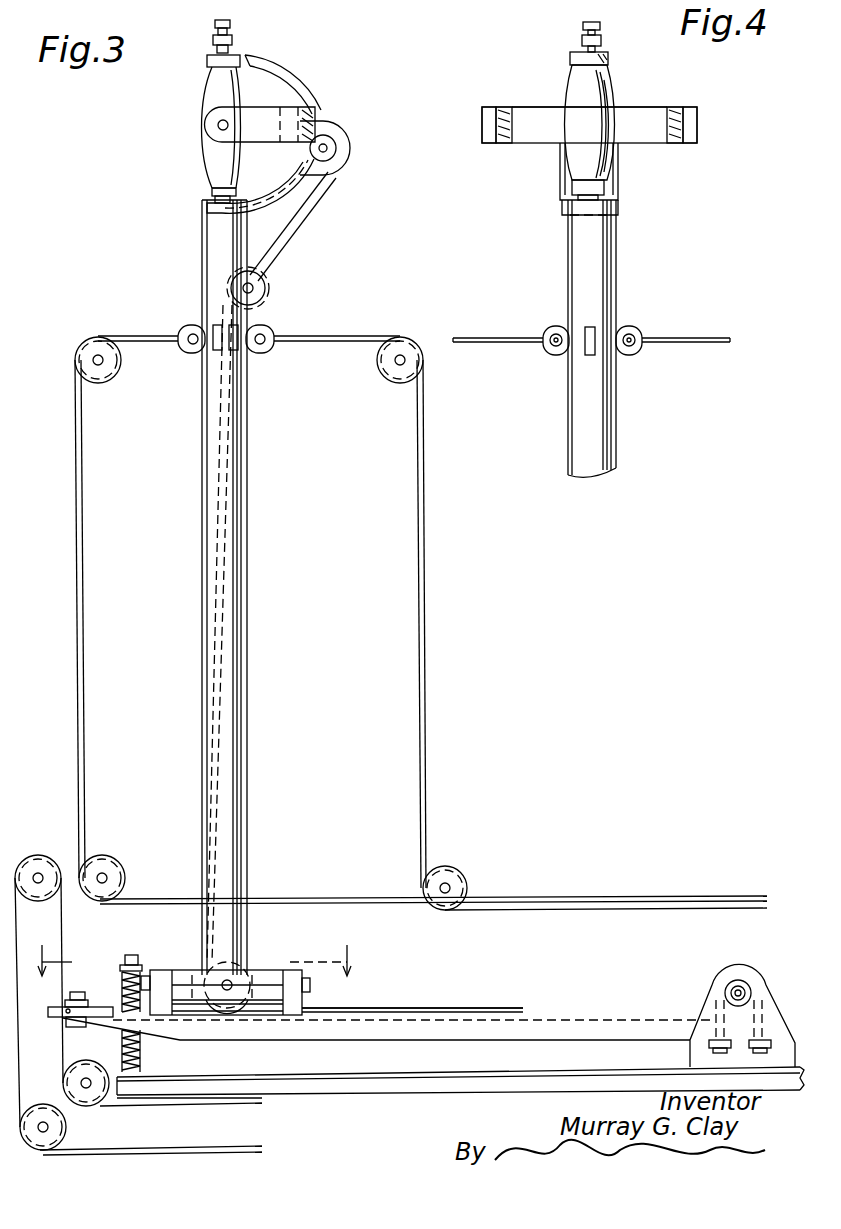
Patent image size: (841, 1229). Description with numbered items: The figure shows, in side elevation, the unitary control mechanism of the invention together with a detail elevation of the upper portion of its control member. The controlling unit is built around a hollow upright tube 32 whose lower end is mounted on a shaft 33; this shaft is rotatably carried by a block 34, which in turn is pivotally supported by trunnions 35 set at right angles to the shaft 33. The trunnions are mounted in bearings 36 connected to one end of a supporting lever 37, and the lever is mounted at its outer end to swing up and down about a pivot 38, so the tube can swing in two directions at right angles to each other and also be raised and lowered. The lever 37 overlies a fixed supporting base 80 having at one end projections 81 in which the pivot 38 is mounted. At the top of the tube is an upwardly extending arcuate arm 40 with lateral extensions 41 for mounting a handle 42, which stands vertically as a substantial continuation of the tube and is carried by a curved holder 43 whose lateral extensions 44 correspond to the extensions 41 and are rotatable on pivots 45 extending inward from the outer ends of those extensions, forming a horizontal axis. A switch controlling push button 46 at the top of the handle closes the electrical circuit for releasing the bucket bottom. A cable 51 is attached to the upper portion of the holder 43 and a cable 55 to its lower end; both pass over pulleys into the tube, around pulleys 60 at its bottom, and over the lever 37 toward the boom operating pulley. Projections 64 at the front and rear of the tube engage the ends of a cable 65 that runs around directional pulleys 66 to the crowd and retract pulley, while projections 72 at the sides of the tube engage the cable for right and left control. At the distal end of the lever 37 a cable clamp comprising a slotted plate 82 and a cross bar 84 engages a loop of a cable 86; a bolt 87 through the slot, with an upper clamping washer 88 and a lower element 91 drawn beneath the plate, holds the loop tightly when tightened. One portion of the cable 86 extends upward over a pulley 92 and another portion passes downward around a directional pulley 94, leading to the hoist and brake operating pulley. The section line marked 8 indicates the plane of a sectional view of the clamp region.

In FIG. 3, the section line 8 is at (195, 959).
In FIG. 3, the hollow upright tube 32 is at (236, 540).
In FIG. 4, the hollow upright tube 32 is at (572, 422).
In FIG. 3, the shaft 33 is at (230, 983).
In FIG. 3, the block 34 is at (180, 982).
In FIG. 3, the trunnions 35 is at (146, 978).
In FIG. 3, the bearings 36 is at (162, 980).
In FIG. 3, the supporting lever 37 is at (392, 1016).
In FIG. 3, the pivot 38 is at (738, 985).
In FIG. 3, the arcuate arm 40 is at (272, 194).
In FIG. 4, the arcuate arm 40 is at (560, 185).
In FIG. 3, the lateral extensions 41 is at (226, 138).
In FIG. 4, the lateral extensions 41 is at (482, 118).
In FIG. 3, the handle 42 is at (205, 95).
In FIG. 4, the handle 42 is at (586, 100).
In FIG. 3, the curved holder 43 is at (272, 82).
In FIG. 4, the curved holder 43 is at (609, 60).
In FIG. 4, the lateral extensions 44 is at (530, 143).
In FIG. 3, the pivots 45 is at (218, 126).
In FIG. 4, the pivots 45 is at (517, 112).
In FIG. 3, the switch controlling push button 46 is at (232, 28).
In FIG. 4, the switch controlling push button 46 is at (600, 15).
In FIG. 3, the cable 51 is at (304, 100).
In FIG. 3, the cable 55 is at (282, 232).
In FIG. 3, the pulleys 60 is at (234, 1012).
In FIG. 3, the projections 64 is at (188, 328).
In FIG. 3, the cable 65 is at (83, 466).
In FIG. 3, the directional pulleys 66 is at (97, 338).
In FIG. 4, the projections 72 is at (556, 332).
In FIG. 3, the fixed supporting base 80 is at (428, 1088).
In FIG. 3, the projections 81 is at (770, 1000).
In FIG. 3, the plate 82 is at (98, 1008).
In FIG. 3, the bar 84 is at (67, 1012).
In FIG. 3, the cable 86 is at (154, 1147).
In FIG. 3, the bolt 87 is at (88, 1000).
In FIG. 3, the upper clamping washer 88 is at (76, 993).
In FIG. 3, the nut 91 is at (78, 1028).
In FIG. 3, the pulley 92 is at (38, 862).
In FIG. 3, the directional pulley 94 is at (162, 1100).